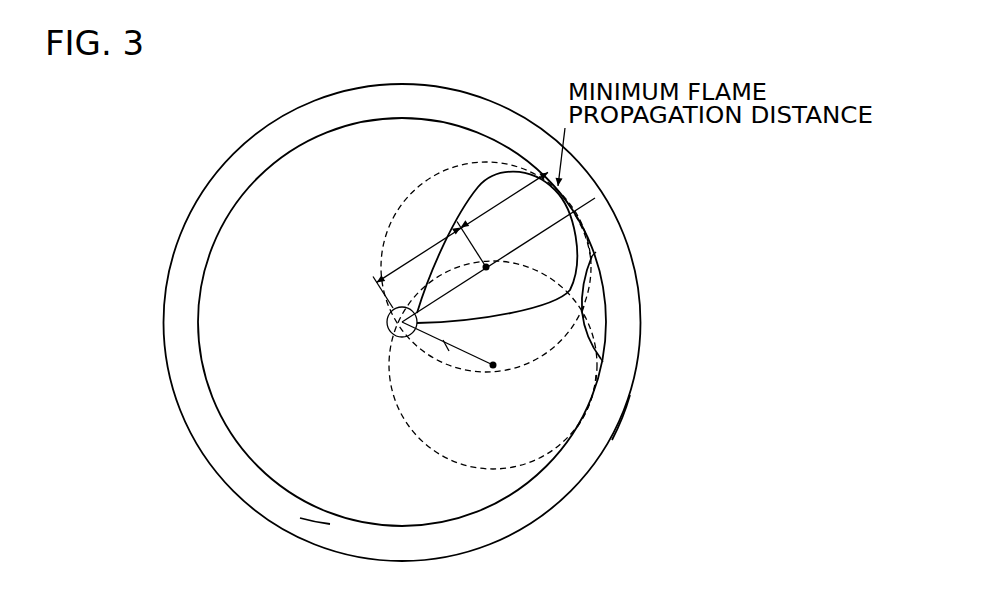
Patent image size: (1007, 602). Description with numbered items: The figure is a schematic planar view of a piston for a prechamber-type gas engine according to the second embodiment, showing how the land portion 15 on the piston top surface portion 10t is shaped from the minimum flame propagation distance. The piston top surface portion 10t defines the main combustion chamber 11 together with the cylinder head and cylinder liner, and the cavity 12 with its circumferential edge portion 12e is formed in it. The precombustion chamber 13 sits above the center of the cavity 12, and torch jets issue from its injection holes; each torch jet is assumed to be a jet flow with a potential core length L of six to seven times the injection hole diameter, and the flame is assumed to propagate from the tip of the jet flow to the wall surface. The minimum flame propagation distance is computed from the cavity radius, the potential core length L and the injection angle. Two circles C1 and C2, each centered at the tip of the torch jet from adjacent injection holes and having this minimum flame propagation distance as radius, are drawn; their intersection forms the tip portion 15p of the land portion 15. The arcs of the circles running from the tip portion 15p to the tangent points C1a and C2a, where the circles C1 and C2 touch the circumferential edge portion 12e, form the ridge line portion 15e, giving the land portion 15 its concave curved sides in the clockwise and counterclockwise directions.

The main combustion chamber 11 is at (210, 242).
The cavity 12 is at (270, 448).
The circumferential edge portion 12e is at (313, 510).
The precombustion chamber 13 is at (390, 332).
The land portion 15 is at (595, 305).
The ridge line portion 15e is at (591, 259).
The tip portion 15p is at (583, 312).
The piston top surface portion 10t is at (621, 422).
The first circle C1 is at (474, 160).
The tangent point C1a is at (592, 204).
The second circle C2 is at (509, 470).
The tangent point C2a is at (588, 417).
The potential core length L is at (415, 260).